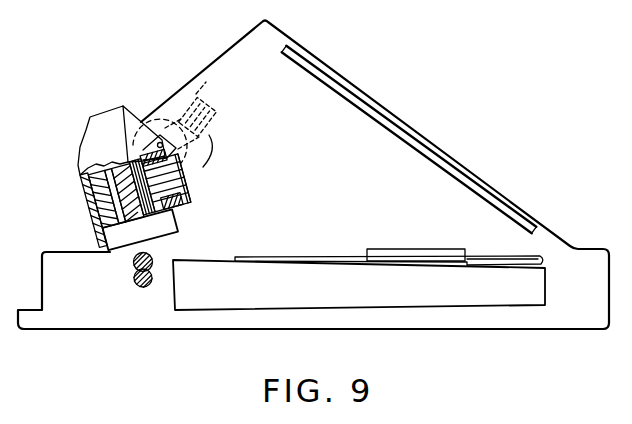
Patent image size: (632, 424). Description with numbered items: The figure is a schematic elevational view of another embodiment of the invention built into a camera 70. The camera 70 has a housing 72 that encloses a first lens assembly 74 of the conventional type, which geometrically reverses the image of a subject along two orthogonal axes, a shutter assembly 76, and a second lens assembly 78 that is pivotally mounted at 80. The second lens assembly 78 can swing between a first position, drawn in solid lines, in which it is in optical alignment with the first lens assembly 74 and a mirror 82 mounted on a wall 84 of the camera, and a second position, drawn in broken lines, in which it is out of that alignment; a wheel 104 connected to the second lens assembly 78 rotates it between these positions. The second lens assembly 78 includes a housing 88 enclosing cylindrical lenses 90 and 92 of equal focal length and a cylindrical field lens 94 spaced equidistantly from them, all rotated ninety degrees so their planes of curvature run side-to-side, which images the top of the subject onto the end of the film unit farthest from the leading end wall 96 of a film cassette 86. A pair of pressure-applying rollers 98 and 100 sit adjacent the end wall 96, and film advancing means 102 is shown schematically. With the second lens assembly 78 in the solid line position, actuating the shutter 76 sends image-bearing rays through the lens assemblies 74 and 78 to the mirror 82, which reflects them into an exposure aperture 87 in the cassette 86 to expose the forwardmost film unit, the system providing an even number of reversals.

The camera 70 is at (398, 92).
The housing 72 is at (90, 127).
The first lens assembly 74 is at (76, 212).
The shutter assembly 76 is at (122, 106).
The second lens assembly 78 is at (200, 185).
The pivot 80 is at (159, 141).
The mirror 82 is at (400, 134).
The wall 84 is at (463, 164).
The film cassette 86 is at (530, 284).
The exposure aperture 87 is at (312, 242).
The housing 88 is at (174, 166).
The cylindrical lens 90 is at (164, 222).
The cylindrical lens 92 is at (186, 192).
The cylindrical field lens 94 is at (173, 210).
The leading end wall 96 is at (173, 304).
The roller 98 is at (135, 283).
The roller 100 is at (133, 263).
The film advancing means 102 is at (434, 248).
The wheel 104 is at (202, 116).